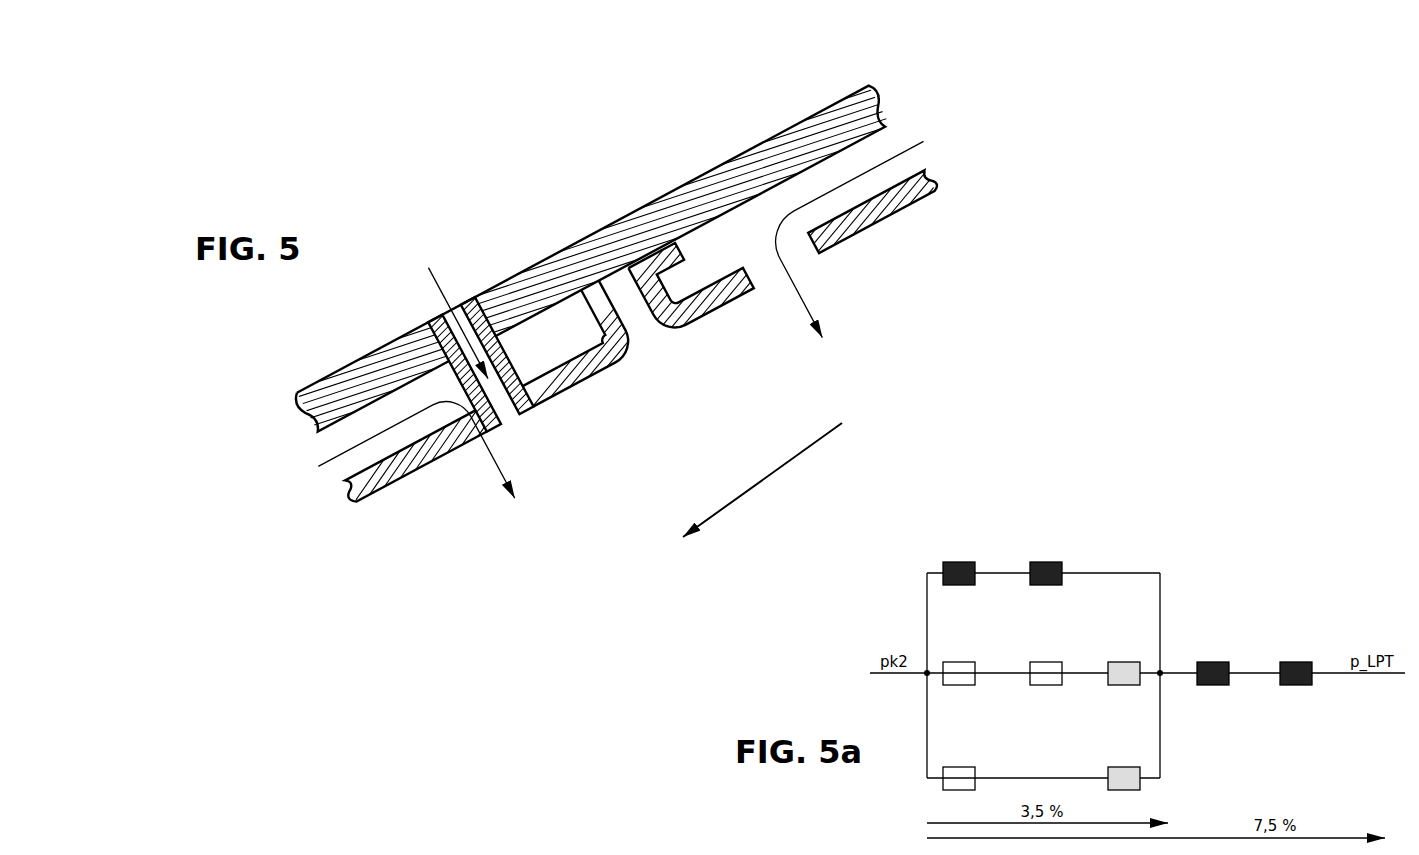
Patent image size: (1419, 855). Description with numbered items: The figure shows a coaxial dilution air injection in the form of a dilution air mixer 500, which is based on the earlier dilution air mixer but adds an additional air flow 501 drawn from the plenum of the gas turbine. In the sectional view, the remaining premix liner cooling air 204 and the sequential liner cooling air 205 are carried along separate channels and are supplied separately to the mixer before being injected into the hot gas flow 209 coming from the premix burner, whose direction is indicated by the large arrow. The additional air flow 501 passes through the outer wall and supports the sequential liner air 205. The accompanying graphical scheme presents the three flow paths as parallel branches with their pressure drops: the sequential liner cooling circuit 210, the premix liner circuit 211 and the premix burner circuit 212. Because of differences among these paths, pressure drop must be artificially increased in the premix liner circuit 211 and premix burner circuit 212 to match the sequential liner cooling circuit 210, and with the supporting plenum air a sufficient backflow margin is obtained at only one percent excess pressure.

In FIG. 5, the dilution air mixer 500 is at (660, 184).
In FIG. 5, the additional air flow 501 is at (438, 282).
In FIG. 5, the premix liner cooling air 204 is at (849, 182).
In FIG. 5, the sequential liner cooling air 205 is at (398, 425).
In FIG. 5, the hot gas flow 209 is at (776, 472).
In FIG. 5A, the sequential liner cooling circuit 210 is at (1160, 598).
In FIG. 5A, the premix liner circuit 211 is at (1083, 673).
In FIG. 5A, the premix burner circuit 212 is at (1160, 735).